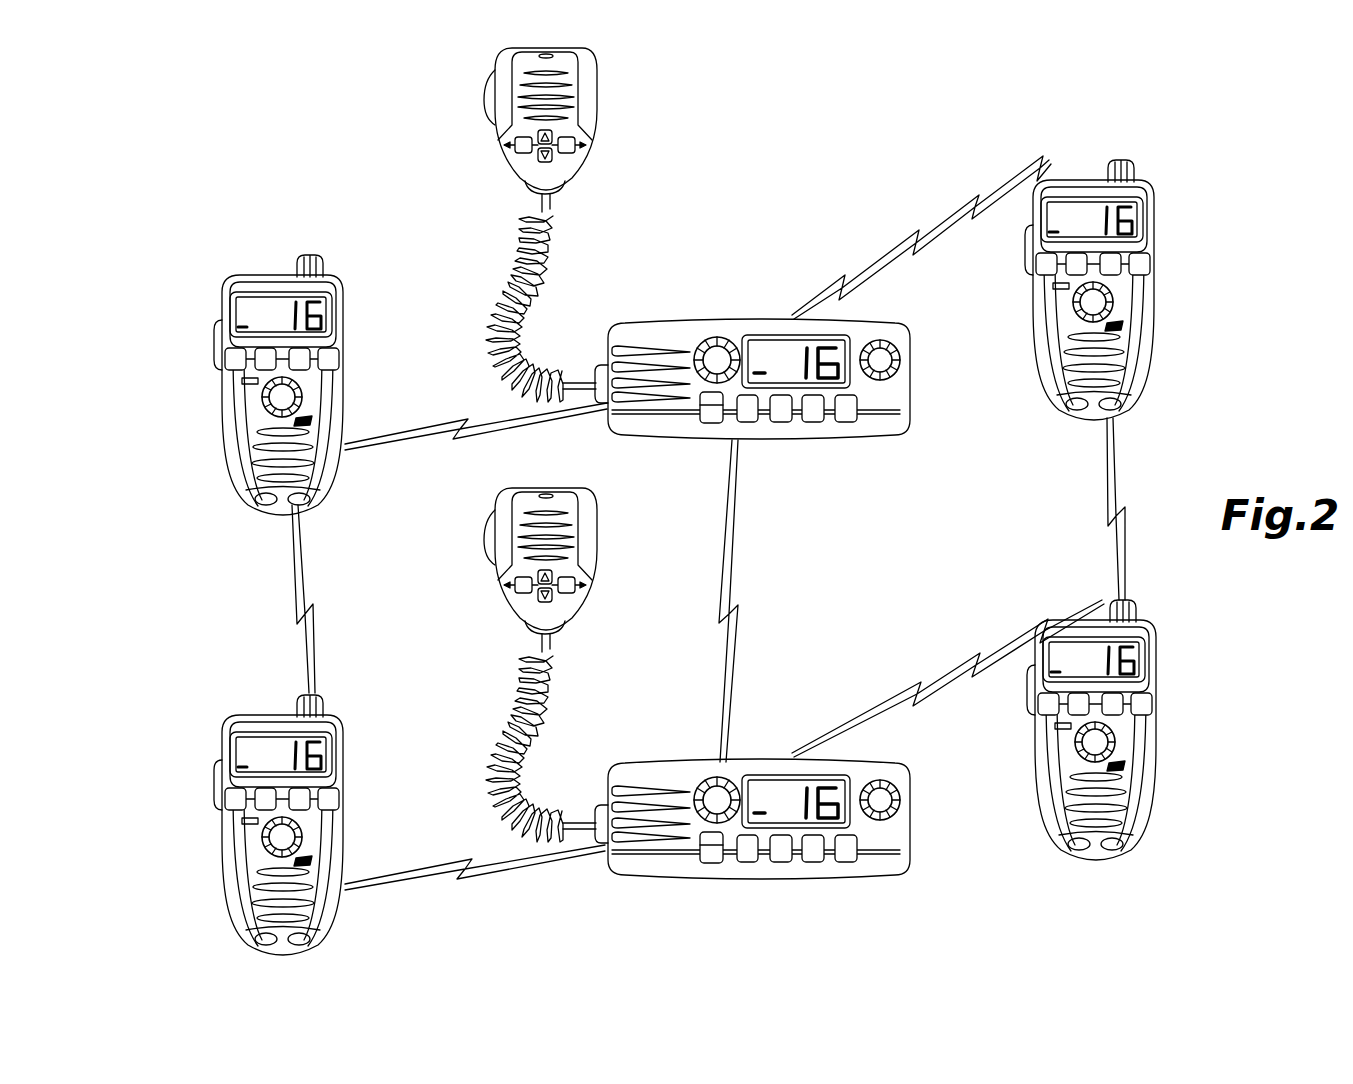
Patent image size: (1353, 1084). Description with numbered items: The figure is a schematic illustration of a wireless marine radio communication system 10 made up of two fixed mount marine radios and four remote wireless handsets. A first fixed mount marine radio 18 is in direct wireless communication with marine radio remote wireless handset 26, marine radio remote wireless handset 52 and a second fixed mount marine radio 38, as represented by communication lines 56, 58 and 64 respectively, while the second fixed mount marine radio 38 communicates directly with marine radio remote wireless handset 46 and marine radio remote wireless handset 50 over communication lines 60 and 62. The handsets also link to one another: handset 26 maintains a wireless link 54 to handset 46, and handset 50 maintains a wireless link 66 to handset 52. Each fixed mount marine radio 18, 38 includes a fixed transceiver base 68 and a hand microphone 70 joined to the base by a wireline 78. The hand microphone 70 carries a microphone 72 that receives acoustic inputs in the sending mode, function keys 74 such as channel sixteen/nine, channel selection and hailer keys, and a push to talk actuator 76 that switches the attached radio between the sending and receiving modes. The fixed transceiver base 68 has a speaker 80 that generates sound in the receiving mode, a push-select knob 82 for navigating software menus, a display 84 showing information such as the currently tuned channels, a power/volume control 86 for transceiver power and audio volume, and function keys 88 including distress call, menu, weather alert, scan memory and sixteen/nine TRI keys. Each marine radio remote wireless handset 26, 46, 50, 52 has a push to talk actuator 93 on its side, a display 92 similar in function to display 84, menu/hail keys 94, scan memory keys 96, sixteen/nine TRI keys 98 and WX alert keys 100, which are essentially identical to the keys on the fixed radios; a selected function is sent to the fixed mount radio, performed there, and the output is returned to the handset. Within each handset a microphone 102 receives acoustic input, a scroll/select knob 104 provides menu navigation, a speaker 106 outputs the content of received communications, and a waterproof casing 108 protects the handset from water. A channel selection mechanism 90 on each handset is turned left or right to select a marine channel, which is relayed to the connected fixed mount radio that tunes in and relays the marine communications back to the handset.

The wireless marine radio communication system 10 is at (809, 170).
The first fixed mount marine radio 18 is at (745, 314).
The marine radio remote wireless handset 26 is at (1094, 244).
The second fixed mount marine radio 38 is at (747, 767).
The marine radio remote wireless handset 46 is at (1096, 684).
The marine radio remote wireless handset 50 is at (283, 779).
The marine radio remote wireless handset 52 is at (267, 249).
The wireless link 54 is at (1113, 468).
The communication line 56 is at (952, 204).
The communication line 58 is at (458, 420).
The communication line 60 is at (955, 645).
The communication line 62 is at (460, 862).
The communication line 64 is at (728, 578).
The wireless link 66 is at (301, 565).
The fixed transceiver base 68 is at (910, 396).
The hand microphone 70 is at (597, 108).
The microphone 72 is at (565, 87).
The function keys 74 is at (555, 150).
The push to talk actuator 76 is at (489, 96).
The wireline 78 is at (561, 278).
The speaker 80 is at (647, 365).
The push-select knob 82 is at (703, 340).
The display 84 is at (817, 337).
The power/volume control 86 is at (901, 356).
The function keys 88 is at (779, 430).
The channel selection mechanism 90 is at (323, 262).
The display 92 is at (327, 305).
The push to talk actuator 93 is at (214, 345).
The menu/hail keys 94 is at (235, 371).
The scan memory keys 96 is at (263, 348).
The 16/9 TRI keys 98 is at (302, 371).
The WX alert keys 100 is at (330, 371).
The microphone 102 is at (246, 384).
The scroll/select knob 104 is at (268, 415).
The speaker 106 is at (258, 465).
The waterproof casing 108 is at (338, 482).